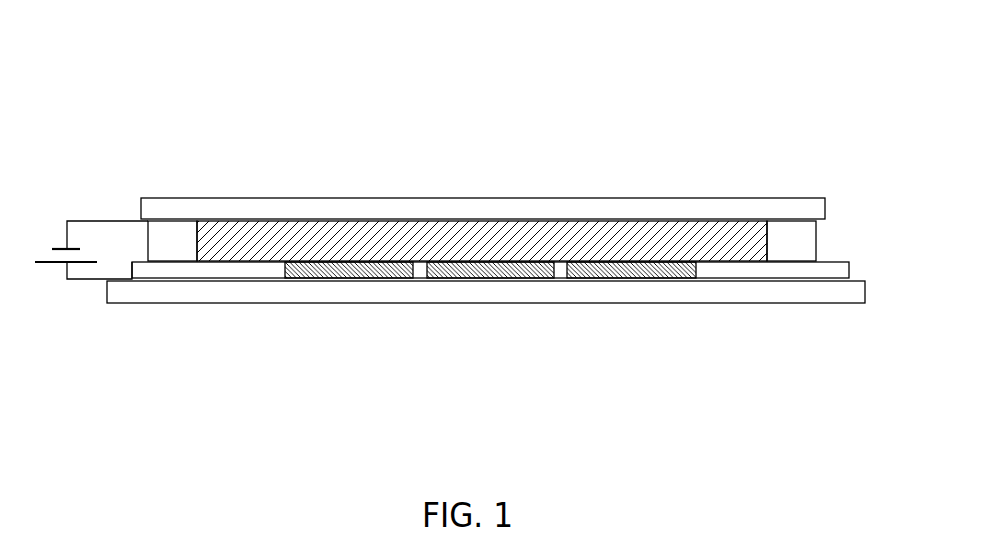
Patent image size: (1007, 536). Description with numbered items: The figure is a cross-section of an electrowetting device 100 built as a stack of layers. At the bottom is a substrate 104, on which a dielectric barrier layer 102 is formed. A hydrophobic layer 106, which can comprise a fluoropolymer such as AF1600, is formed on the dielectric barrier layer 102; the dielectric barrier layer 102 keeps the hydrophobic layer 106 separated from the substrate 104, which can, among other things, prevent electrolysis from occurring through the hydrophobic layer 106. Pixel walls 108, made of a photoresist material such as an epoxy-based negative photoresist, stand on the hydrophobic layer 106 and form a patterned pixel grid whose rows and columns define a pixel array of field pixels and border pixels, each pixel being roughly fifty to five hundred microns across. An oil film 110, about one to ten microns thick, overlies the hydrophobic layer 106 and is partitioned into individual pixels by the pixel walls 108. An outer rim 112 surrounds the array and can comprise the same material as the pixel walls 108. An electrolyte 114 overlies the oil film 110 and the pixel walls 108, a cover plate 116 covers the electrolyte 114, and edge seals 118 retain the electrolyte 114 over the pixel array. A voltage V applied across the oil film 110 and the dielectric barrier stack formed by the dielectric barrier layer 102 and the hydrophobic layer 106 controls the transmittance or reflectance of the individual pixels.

The electrowetting device 100 is at (760, 68).
The dielectric barrier layer 102 is at (107, 281).
The substrate 104 is at (700, 304).
The hydrophobic layer 106 is at (325, 280).
The pixel walls 108 is at (420, 280).
The oil film 110 is at (602, 280).
The outer rim 112 is at (787, 280).
The electrolyte 114 is at (547, 219).
The cover plate 116 is at (275, 198).
The edge seals 118 is at (785, 218).